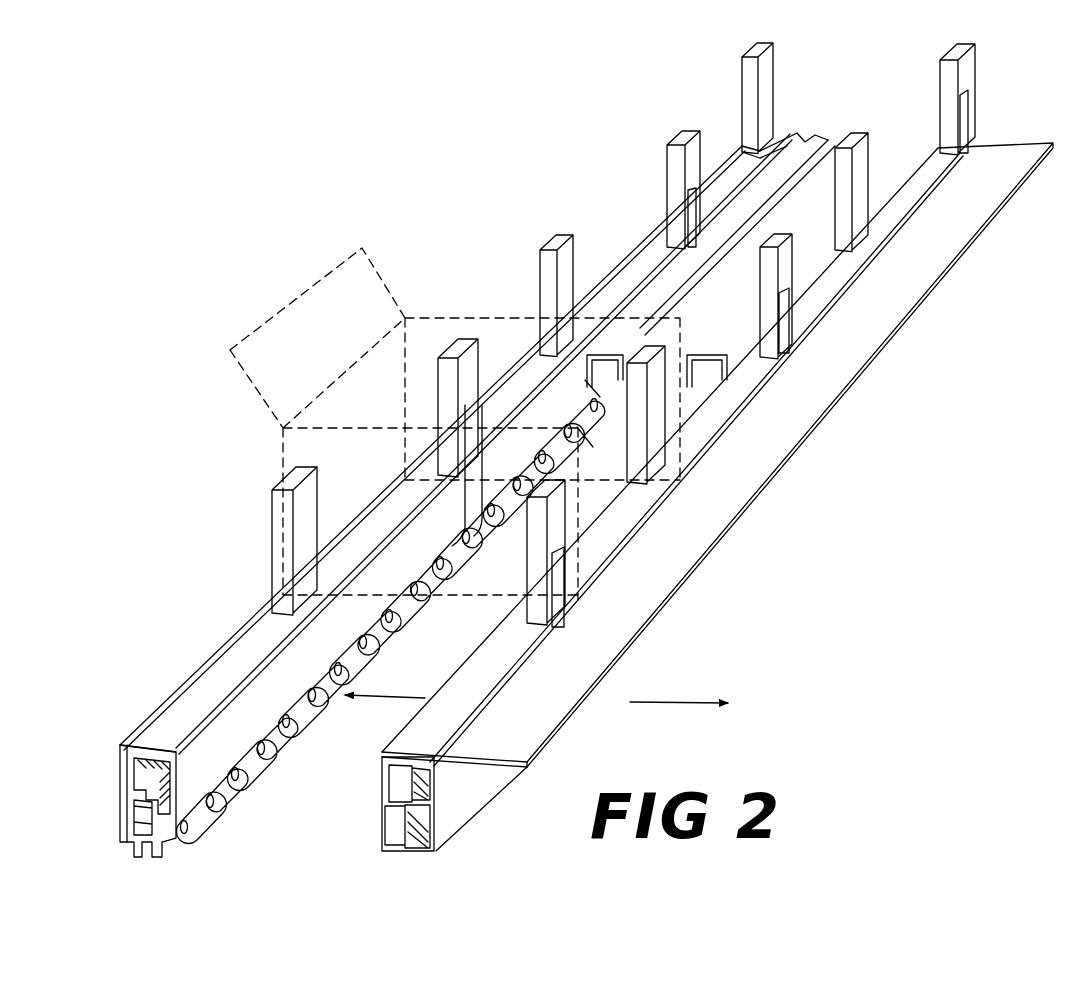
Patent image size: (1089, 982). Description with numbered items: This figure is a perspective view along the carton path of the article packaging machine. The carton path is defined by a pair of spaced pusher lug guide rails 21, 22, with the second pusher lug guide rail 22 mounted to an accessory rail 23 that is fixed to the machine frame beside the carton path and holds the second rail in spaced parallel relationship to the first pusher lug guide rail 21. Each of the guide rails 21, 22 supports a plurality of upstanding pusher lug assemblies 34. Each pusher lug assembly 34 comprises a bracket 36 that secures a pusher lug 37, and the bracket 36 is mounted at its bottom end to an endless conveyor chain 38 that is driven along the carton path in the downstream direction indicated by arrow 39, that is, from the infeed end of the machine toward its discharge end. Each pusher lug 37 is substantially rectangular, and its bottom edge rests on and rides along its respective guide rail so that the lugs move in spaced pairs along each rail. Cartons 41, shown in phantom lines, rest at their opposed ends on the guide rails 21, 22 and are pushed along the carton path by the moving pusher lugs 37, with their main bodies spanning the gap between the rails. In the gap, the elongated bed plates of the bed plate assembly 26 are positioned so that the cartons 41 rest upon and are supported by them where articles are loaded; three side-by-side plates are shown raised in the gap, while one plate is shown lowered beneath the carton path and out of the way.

The first pusher lug guide rail 21 is at (630, 278).
The second pusher lug guide rail 22 is at (905, 193).
The accessory rail 23 is at (807, 390).
The bed plate assembly 26 is at (760, 178).
The pusher lug assembly 34 is at (523, 268).
The bracket 36 is at (470, 530).
The pusher lug 37 is at (275, 510).
The endless conveyor chain 38 is at (311, 718).
The arrow indicating direction of chain movement 39 is at (482, 268).
The carton 41 is at (363, 367).